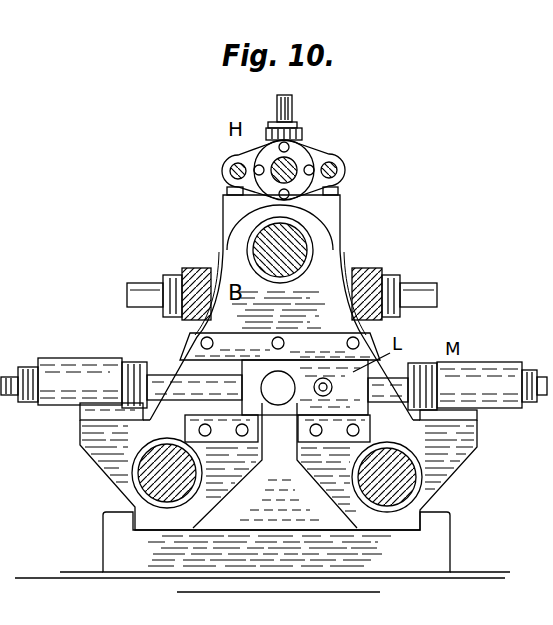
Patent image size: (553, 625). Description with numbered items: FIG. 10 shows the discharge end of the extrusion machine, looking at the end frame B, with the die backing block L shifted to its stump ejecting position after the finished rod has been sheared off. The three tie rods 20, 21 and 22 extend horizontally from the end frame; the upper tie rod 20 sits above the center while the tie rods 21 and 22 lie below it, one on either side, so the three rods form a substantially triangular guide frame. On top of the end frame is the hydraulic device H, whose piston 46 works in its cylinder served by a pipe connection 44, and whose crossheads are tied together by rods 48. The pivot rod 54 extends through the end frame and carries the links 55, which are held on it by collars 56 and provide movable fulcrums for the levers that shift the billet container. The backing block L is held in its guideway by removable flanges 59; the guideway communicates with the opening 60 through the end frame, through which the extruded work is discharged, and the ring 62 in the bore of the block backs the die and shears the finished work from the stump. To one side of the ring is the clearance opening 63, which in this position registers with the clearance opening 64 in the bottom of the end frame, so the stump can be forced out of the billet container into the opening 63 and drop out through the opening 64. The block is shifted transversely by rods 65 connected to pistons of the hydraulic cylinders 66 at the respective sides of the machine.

The pipe connection 44 is at (292, 108).
The piston 46 is at (293, 166).
The rods 48 is at (337, 170).
The tie rod 20 is at (300, 237).
The pivot rod 54 is at (143, 290).
The links 55 is at (196, 278).
The collars 56 is at (173, 278).
The removable flanges 59 is at (227, 338).
The opening 60 is at (278, 388).
The ring 62 is at (333, 388).
The clearance opening 63 is at (260, 418).
The clearance opening 64 is at (266, 458).
The rods 65 is at (167, 385).
The hydraulic cylinders 66 is at (80, 370).
The tie rod 22 is at (143, 481).
The tie rod 21 is at (408, 481).